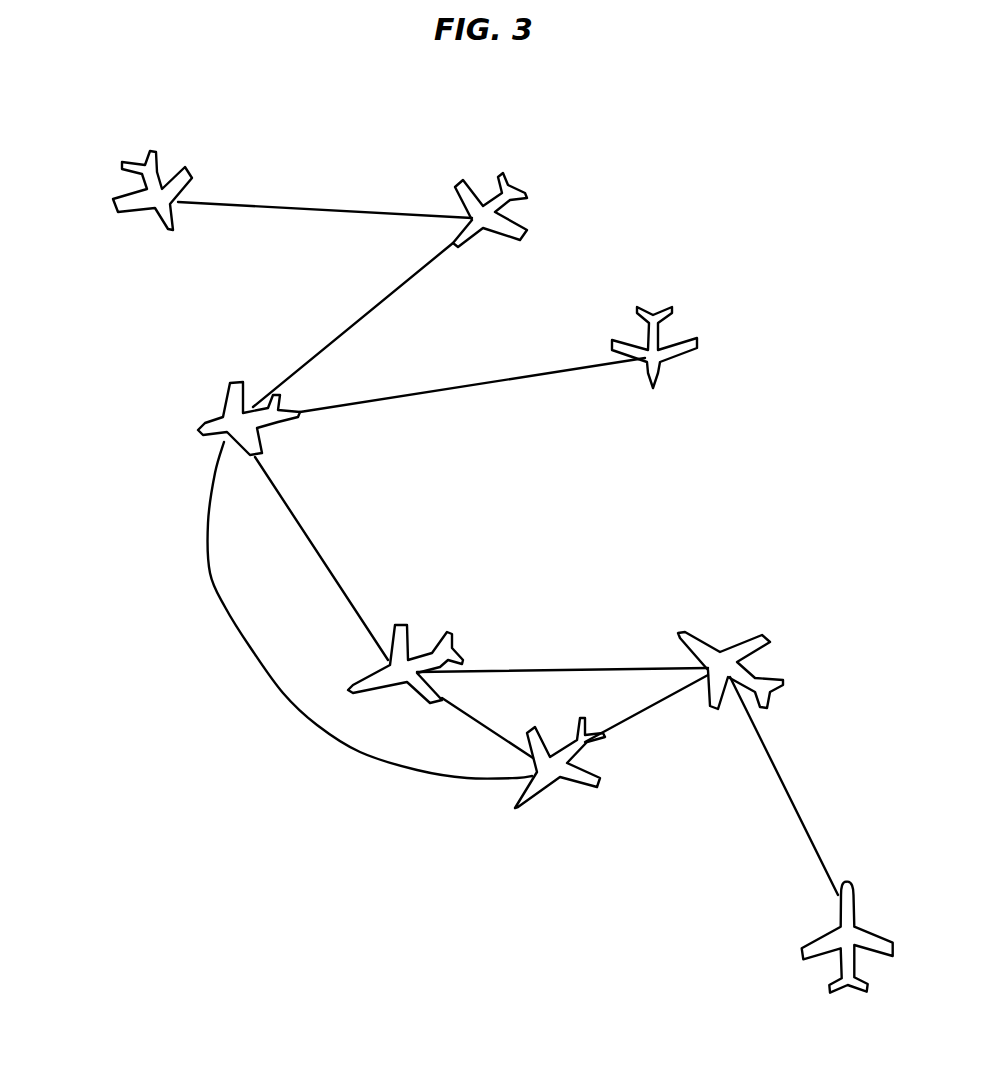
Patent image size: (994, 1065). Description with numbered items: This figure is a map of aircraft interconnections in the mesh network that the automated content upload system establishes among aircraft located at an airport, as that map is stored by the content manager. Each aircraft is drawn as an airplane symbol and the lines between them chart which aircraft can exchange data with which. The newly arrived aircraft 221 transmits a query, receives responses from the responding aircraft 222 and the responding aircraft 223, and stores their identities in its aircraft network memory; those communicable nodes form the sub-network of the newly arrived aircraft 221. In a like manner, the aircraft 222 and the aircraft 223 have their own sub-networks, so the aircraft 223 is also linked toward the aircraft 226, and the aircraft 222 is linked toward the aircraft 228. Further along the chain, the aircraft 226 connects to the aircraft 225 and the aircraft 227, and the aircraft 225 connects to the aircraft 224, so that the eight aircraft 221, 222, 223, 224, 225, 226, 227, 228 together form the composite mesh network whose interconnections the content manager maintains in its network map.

The newly arrived aircraft 221 is at (543, 788).
The responding aircraft 222 is at (770, 674).
The responding aircraft 223 is at (418, 652).
The aircraft 224 is at (142, 184).
The aircraft 225 is at (511, 209).
The aircraft 226 is at (210, 420).
The aircraft 227 is at (662, 368).
The aircraft 228 is at (840, 963).